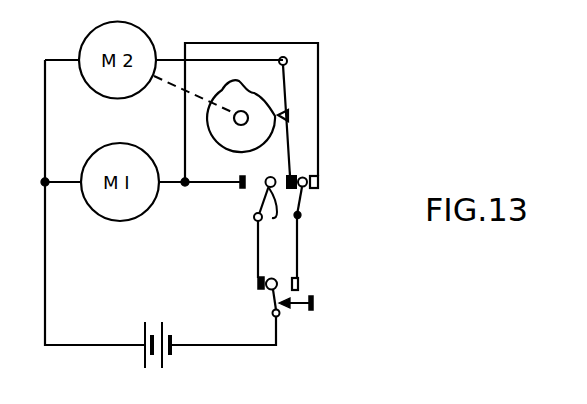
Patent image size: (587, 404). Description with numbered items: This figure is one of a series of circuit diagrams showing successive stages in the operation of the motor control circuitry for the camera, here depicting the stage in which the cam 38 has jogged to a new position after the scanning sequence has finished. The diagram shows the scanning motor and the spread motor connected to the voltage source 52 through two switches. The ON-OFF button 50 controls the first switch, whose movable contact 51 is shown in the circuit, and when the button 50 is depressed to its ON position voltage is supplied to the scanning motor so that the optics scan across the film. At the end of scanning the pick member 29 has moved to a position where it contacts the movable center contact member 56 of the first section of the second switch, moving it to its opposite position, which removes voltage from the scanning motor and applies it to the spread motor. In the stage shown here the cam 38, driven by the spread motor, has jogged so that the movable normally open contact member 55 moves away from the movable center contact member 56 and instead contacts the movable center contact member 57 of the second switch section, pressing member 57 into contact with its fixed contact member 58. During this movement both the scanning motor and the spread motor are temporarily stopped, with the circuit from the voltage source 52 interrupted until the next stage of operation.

The pick member 29 is at (260, 202).
The cam 38 is at (226, 89).
The ON-OFF button 50 is at (317, 300).
The switch 51 is at (256, 286).
The voltage source 52 is at (143, 336).
The movable normally open contact member 55 is at (297, 177).
The movable center contact member 56 is at (276, 216).
The movable center contact member 57 is at (305, 202).
The fixed contact member 58 is at (319, 184).